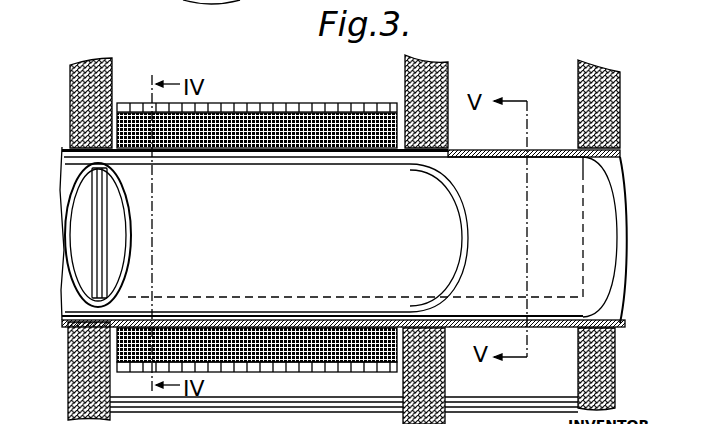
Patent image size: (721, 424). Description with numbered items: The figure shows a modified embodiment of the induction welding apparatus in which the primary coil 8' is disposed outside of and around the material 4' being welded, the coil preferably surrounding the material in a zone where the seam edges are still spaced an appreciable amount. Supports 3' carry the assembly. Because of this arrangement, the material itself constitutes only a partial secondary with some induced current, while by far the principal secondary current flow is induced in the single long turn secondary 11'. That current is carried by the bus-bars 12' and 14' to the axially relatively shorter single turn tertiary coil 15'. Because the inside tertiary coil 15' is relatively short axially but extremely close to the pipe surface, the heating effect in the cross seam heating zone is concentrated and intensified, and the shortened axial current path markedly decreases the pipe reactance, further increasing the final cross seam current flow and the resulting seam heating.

The supporting posts / uprights 3' is at (362, 239).
The material being welded 4' is at (343, 222).
The primary coil 8' is at (257, 252).
The single long turn secondary 11' is at (266, 238).
The bus-bar 12' is at (142, 233).
The bus-bar 14' is at (69, 235).
The single turn tertiary coil 15' is at (407, 240).